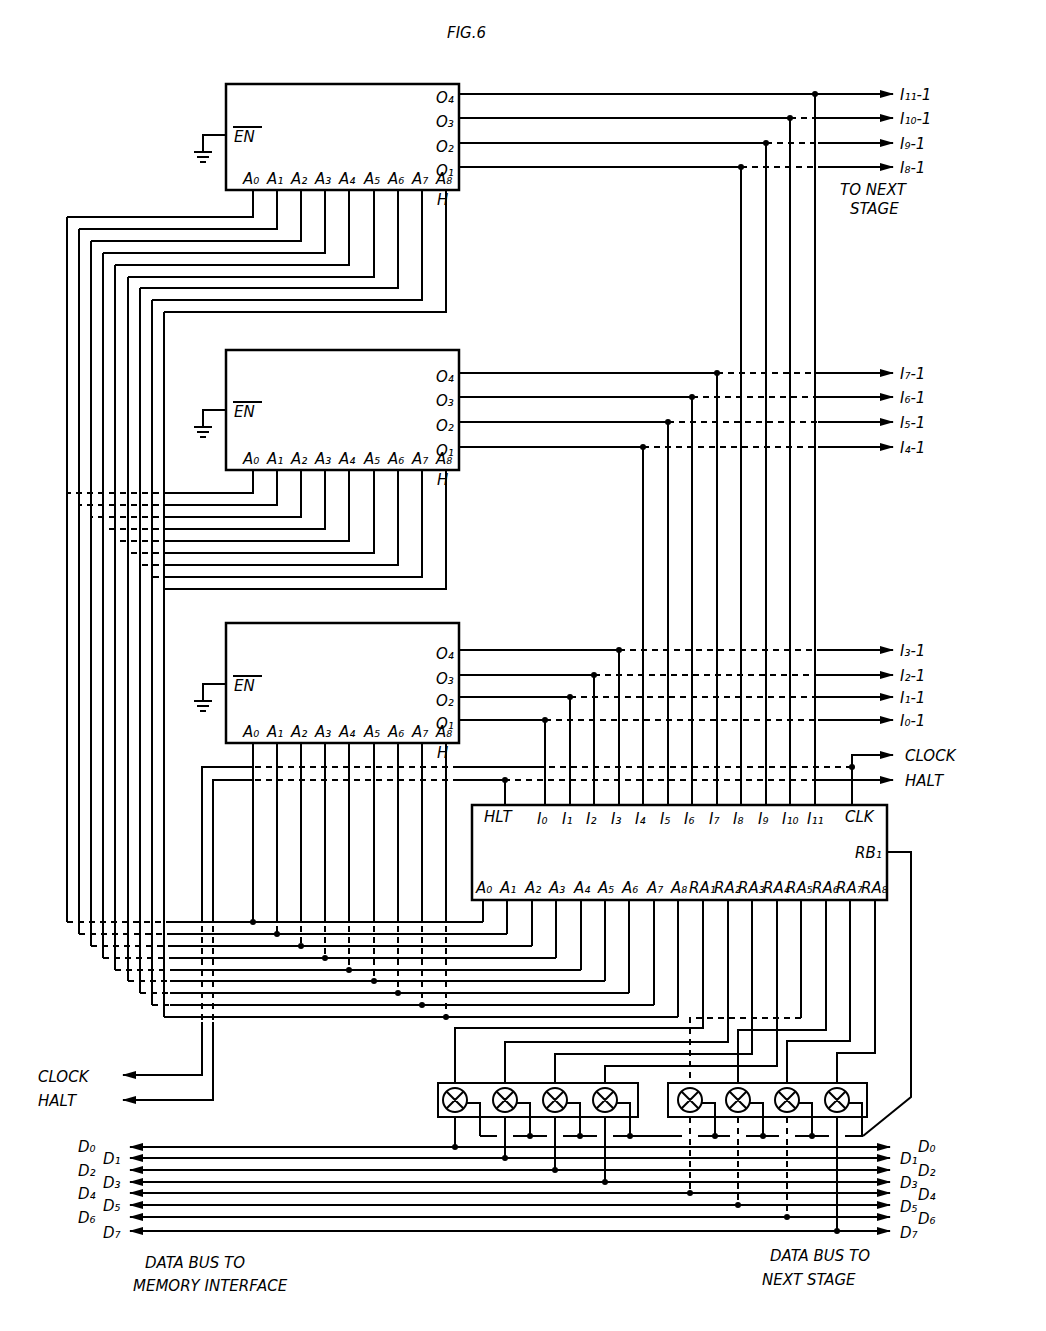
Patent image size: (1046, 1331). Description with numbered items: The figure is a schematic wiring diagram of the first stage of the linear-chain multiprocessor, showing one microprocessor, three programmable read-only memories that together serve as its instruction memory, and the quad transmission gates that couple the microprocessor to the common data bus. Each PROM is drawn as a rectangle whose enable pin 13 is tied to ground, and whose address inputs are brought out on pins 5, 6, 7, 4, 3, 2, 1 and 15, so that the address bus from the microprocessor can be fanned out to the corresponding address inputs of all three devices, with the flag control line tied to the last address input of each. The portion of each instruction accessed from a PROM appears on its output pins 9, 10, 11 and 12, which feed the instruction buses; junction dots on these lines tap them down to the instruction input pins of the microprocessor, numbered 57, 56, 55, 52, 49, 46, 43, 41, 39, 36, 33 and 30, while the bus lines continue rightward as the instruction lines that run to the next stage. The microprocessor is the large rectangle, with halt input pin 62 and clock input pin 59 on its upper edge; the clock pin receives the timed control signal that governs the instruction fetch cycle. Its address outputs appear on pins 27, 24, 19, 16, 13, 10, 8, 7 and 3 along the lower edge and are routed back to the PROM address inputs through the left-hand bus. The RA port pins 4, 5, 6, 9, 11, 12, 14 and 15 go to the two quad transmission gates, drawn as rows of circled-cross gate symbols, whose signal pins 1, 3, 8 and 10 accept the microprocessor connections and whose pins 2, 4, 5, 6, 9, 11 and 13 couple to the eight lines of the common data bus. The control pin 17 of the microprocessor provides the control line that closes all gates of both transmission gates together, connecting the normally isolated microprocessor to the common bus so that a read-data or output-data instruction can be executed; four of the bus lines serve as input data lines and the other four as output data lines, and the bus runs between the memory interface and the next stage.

The decoder address pin 1 / lamp pin 1 is at (415, 636).
The decoder address pin 2 / lamp pin 2 is at (408, 663).
The pin 3 is at (425, 636).
The pin 4 is at (419, 663).
The pin 5 is at (401, 663).
The pin 6 is at (432, 663).
The pin 7 is at (375, 597).
The pin 8 is at (664, 990).
The pin 9 / output O4 9 is at (625, 580).
The pin 10 / output O3 10 is at (653, 591).
The pin 11 / output O2 11 is at (654, 631).
The pin 12 / output O1 12 is at (651, 616).
The enable pin 13 is at (527, 626).
The pin 14 is at (512, 636).
The pin 15 is at (518, 636).
The pin 16 is at (556, 928).
The RB1 output pin 17 is at (898, 984).
The pin 19 is at (532, 922).
The pin 24 is at (506, 916).
The pin 27 is at (480, 910).
The input I11 pin 30 is at (809, 449).
The input I10 pin 33 is at (784, 461).
The input I9 pin 36 is at (760, 474).
The input I8 pin 39 is at (735, 486).
The input I7 pin 41 is at (711, 589).
The input I6 pin 43 is at (686, 601).
The input I5 pin 46 is at (662, 613).
The input I4 pin 49 is at (637, 626).
The input I3 pin 52 is at (613, 727).
The input I2 pin 55 is at (588, 740).
The input I1 pin 56 is at (564, 751).
The input I0 pin 57 is at (540, 762).
The clock pin 59 is at (842, 792).
The halt pin 62 is at (492, 792).